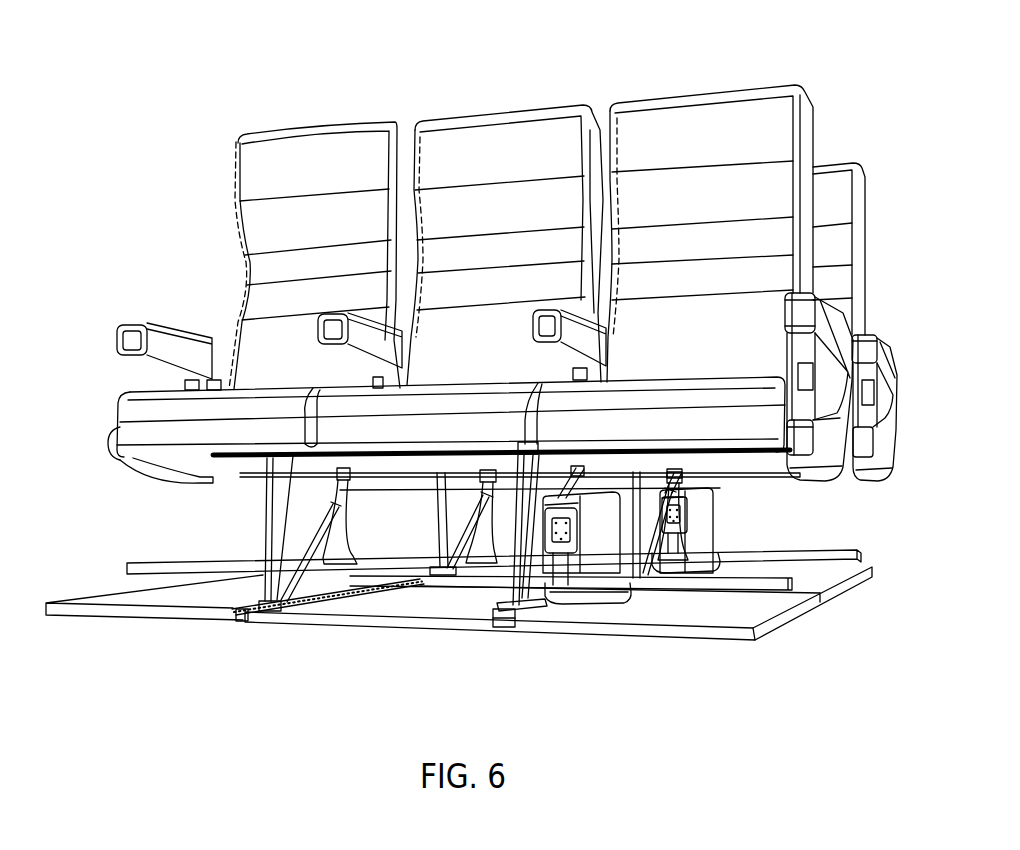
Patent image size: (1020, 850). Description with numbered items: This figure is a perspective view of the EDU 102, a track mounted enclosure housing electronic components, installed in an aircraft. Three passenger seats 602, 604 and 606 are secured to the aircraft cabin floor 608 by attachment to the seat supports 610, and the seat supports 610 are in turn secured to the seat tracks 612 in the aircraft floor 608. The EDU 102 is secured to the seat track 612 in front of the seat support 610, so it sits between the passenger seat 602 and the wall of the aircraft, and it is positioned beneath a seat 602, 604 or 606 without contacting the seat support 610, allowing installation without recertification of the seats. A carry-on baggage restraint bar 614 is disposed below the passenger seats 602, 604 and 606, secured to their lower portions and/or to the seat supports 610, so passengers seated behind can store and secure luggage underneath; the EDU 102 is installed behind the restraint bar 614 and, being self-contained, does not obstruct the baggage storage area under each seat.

The EDU 102 is at (730, 518).
The passenger seat 602 is at (231, 198).
The passenger seat 604 is at (518, 119).
The passenger seat 606 is at (813, 138).
The aircraft cabin floor 608 is at (411, 611).
The seat support 610 is at (503, 510).
The seat track 612 is at (500, 637).
The carry-on baggage restraint bar 614 is at (161, 580).